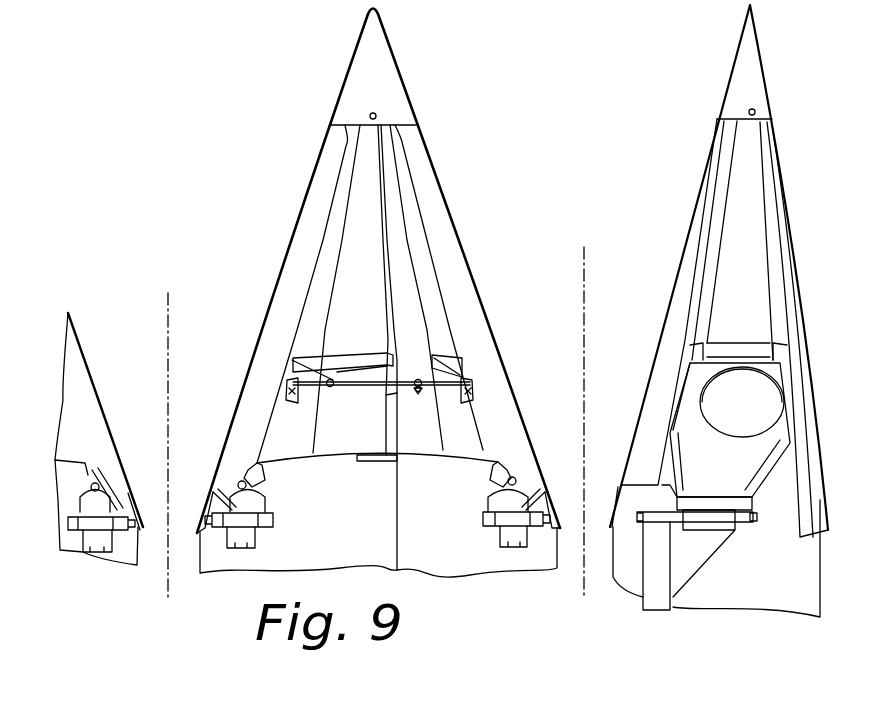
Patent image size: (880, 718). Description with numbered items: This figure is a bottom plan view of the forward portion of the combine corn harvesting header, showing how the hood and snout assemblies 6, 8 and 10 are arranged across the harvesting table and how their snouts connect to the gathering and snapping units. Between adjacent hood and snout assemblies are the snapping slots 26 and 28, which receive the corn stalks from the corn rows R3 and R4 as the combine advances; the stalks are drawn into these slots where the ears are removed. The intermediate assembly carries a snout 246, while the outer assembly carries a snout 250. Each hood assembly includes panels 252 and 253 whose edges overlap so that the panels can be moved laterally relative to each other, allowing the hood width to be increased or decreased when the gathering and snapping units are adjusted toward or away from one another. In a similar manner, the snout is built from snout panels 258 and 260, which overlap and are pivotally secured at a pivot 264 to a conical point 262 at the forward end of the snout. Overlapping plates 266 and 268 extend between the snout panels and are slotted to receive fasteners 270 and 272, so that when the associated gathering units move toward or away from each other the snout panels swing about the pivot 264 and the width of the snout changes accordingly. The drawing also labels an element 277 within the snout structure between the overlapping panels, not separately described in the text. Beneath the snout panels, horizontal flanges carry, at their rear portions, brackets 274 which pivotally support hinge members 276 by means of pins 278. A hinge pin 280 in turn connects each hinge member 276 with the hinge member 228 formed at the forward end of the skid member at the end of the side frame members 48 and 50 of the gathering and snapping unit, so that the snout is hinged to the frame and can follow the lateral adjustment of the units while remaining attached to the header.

The hood and snout assembly 6 is at (103, 371).
The hood and snout assembly 8 is at (485, 249).
The hood and snout assembly 10 is at (803, 258).
The snapping slot 26 is at (168, 597).
The snapping slot 28 is at (585, 595).
The corn row R3 is at (168, 330).
The corn row R4 is at (585, 283).
The side frame member 48 is at (240, 548).
The side frame member 50 is at (518, 547).
The hinge member 228 is at (245, 522).
The snout 246 is at (433, 162).
The snout 250 is at (709, 135).
The hood panel 252 is at (417, 555).
The hood panel 253 is at (372, 542).
The snout panel 258 is at (437, 445).
The snout panel 260 is at (353, 428).
The conical point 262 is at (363, 60).
The pivot 264 is at (377, 115).
The overlapping plate 266 is at (305, 367).
The overlapping plate 268 is at (462, 375).
The fastener 270 is at (417, 390).
The fastener 272 is at (337, 364).
The bracket 274 is at (250, 477).
The hinge member 276 is at (235, 507).
The center spar 277 is at (430, 220).
The pin 278 is at (250, 486).
The hinge pin 280 is at (275, 518).